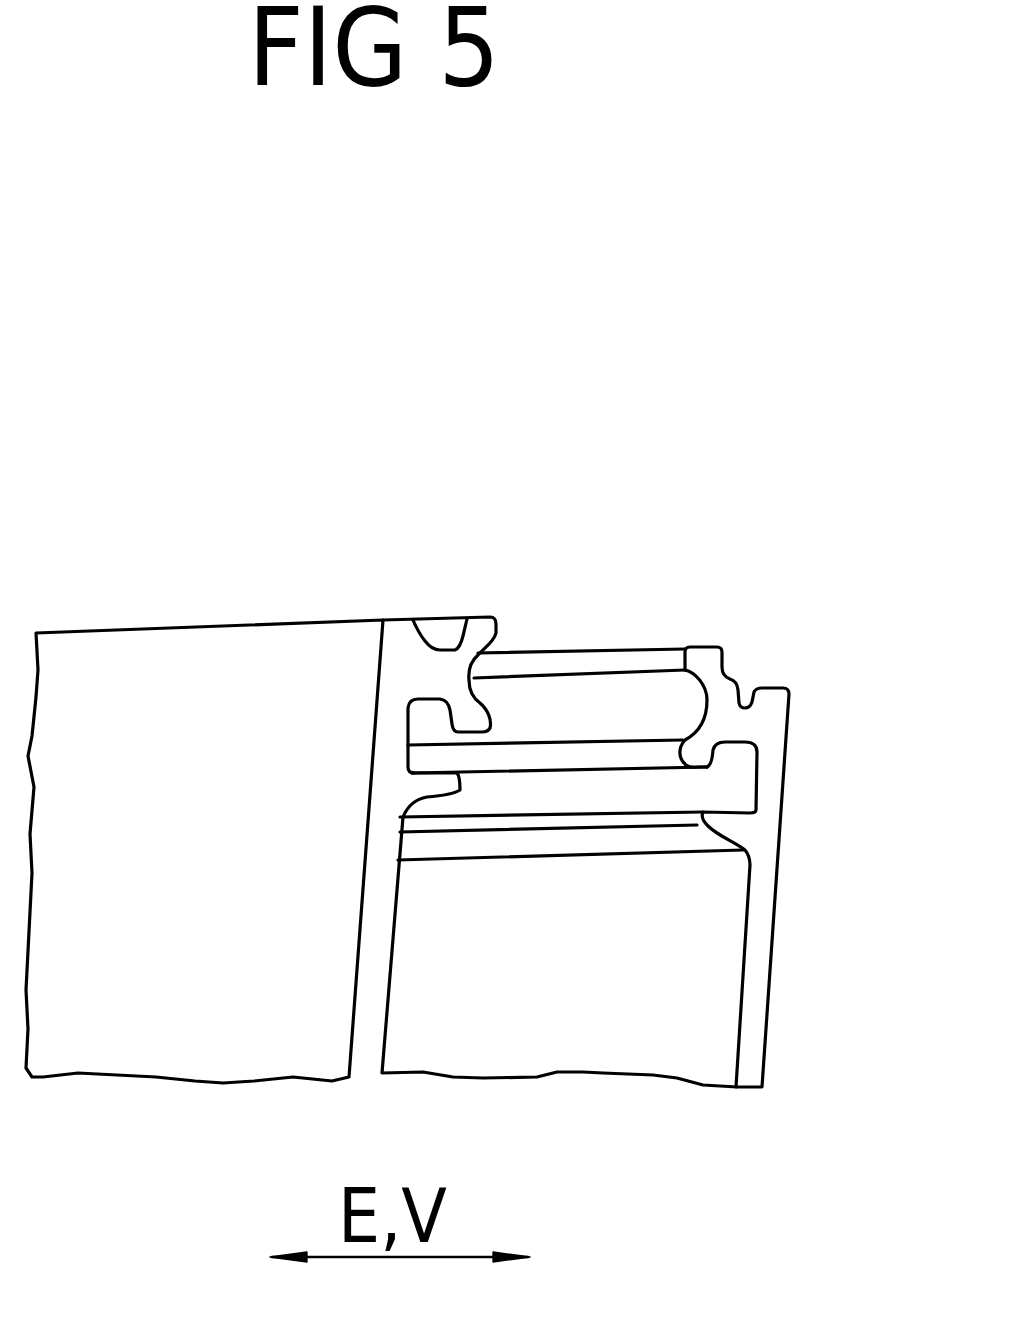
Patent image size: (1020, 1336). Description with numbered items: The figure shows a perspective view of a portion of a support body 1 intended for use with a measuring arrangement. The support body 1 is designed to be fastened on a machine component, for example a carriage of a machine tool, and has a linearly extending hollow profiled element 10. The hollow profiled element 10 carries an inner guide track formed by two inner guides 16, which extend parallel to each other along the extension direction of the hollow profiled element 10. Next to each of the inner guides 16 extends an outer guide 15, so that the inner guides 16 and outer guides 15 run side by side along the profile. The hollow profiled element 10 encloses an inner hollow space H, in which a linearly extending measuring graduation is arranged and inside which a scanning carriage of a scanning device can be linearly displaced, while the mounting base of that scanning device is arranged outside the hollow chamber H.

The support body 1 is at (147, 612).
The hollow profiled element 10 is at (722, 912).
The outer guide 15 is at (443, 640).
The inner guide 16 is at (698, 698).
The inner hollow space H is at (650, 1000).